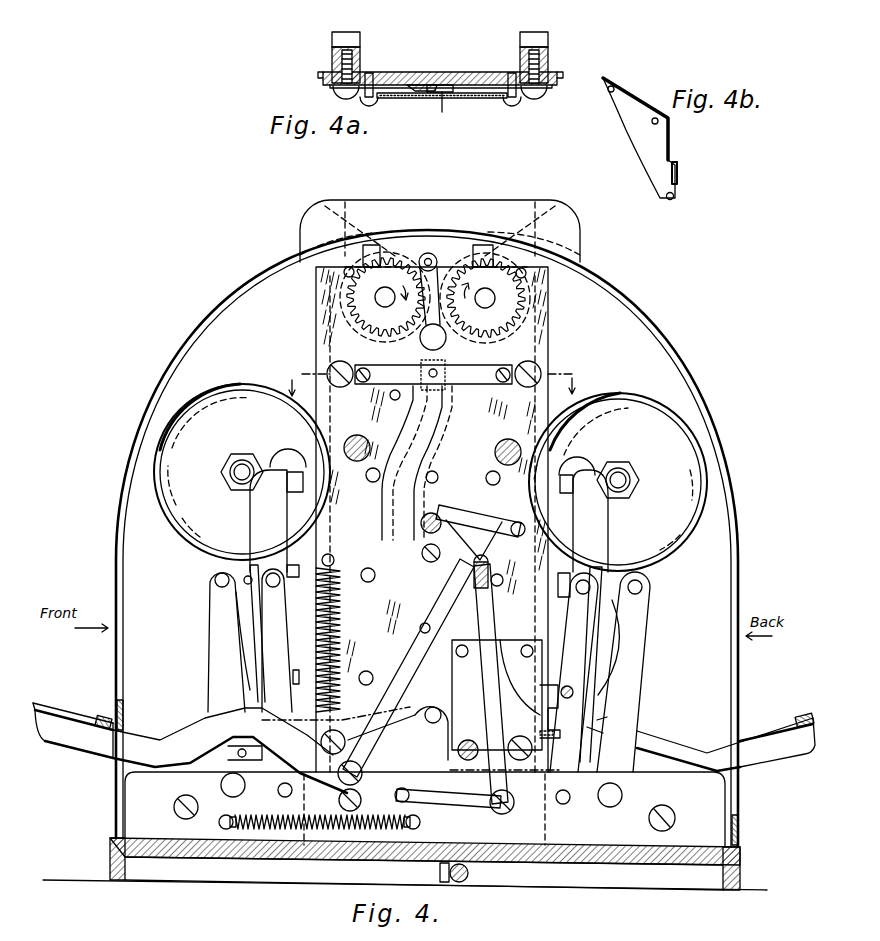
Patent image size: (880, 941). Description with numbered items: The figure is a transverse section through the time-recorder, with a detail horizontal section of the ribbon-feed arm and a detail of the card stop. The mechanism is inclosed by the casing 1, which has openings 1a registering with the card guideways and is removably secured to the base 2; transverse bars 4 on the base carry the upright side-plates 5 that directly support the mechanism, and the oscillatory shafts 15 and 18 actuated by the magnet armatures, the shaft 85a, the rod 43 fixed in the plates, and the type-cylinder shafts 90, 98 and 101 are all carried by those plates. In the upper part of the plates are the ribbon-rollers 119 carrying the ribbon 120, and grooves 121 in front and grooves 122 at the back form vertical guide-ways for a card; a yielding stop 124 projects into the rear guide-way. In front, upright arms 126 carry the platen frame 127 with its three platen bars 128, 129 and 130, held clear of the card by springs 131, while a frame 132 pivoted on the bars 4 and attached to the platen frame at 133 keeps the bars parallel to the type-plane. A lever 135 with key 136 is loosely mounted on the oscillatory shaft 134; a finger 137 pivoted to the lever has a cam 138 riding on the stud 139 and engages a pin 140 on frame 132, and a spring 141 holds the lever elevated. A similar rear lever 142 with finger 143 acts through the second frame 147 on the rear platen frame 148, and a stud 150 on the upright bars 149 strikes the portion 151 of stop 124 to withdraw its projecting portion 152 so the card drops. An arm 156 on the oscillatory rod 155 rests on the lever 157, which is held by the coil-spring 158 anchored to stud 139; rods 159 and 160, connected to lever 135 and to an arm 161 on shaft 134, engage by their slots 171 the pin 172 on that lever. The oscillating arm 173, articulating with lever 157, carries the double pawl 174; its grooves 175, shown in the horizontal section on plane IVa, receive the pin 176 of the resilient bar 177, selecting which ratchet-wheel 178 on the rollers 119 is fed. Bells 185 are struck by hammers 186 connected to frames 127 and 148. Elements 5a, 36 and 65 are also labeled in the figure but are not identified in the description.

In FIG. 4, the casing 1 is at (740, 554).
In FIG. 4, the openings 1a is at (312, 203).
In FIG. 4, the base 2 is at (742, 863).
In FIG. 4, the transverse bars 4 is at (425, 809).
In FIG. 4A, the side-plates 5 is at (458, 72).
In FIG. 4, the side-plates 5 is at (432, 508).
In FIG. 4, the frame top bar 5a is at (350, 262).
In FIG. 4, the oscillatory shaft 15 is at (437, 515).
In FIG. 4, the shaft 18 is at (468, 740).
In FIG. 4, the pin 36 is at (499, 484).
In FIG. 4, the rod 43 is at (437, 479).
In FIG. 4, the pin 65 is at (370, 481).
In FIG. 4, the shaft 85a is at (425, 623).
In FIG. 4, the shaft 90 is at (369, 583).
In FIG. 4, the shaft 98 is at (499, 584).
In FIG. 4, the shaft 101 is at (368, 671).
In FIG. 4, the ribbon-rollers 119 is at (435, 241).
In FIG. 4, the ribbon 120 is at (552, 345).
In FIG. 4A, the grooves 121 is at (322, 72).
In FIG. 4A, the grooves 122 is at (552, 72).
In FIG. 4B, the yielding stop 124 is at (632, 126).
In FIG. 4, the yielding stop 124 is at (505, 705).
In FIG. 4, the upright arms 126 is at (277, 640).
In FIG. 4, the platen frame 127 is at (268, 521).
In FIG. 4, the platen bar 128 is at (288, 485).
In FIG. 4, the platen bar 129 is at (290, 566).
In FIG. 4, the platen bar 130 is at (293, 680).
In FIG. 4, the springs 131 is at (268, 633).
In FIG. 4, the frame 132 is at (222, 783).
In FIG. 4, the pivot 133 is at (215, 580).
In FIG. 4, the oscillatory shaft 134 is at (432, 804).
In FIG. 4, the manually-operated lever 135 is at (192, 742).
In FIG. 4, the key 136 is at (62, 712).
In FIG. 4, the finger 137 is at (420, 712).
In FIG. 4, the cam 138 is at (342, 728).
In FIG. 4, the stud 139 is at (326, 754).
In FIG. 4, the pin 140 is at (232, 748).
In FIG. 4, the spring 141 is at (256, 824).
In FIG. 4, the second manually-operated lever 142 is at (726, 742).
In FIG. 4, the finger 143 is at (592, 746).
In FIG. 4, the second frame 147 is at (610, 810).
In FIG. 4, the platen frame 148 is at (584, 521).
In FIG. 4, the upright bars 149 is at (574, 672).
In FIG. 4, the stud 150 is at (566, 699).
In FIG. 4B, the portion of stop 151 is at (668, 174).
In FIG. 4, the portion of stop 151 is at (558, 692).
In FIG. 4B, the projecting portion 152 is at (675, 197).
In FIG. 4, the projecting portion 152 is at (549, 733).
In FIG. 4, the oscillatory rod 155 is at (520, 523).
In FIG. 4, the arm 156 is at (482, 521).
In FIG. 4, the lever 157 is at (446, 552).
In FIG. 4, the coil-spring 158 is at (341, 637).
In FIG. 4, the rod 159 is at (406, 672).
In FIG. 4, the rod 160 is at (494, 689).
In FIG. 4, the arm 161 is at (448, 797).
In FIG. 4, the slots 171 is at (472, 572).
In FIG. 4, the pin 172 is at (486, 559).
In FIG. 4A, the oscillating arm 173 is at (420, 85).
In FIG. 4, the oscillating arm 173 is at (401, 485).
In FIG. 4, the double pawl 174 is at (433, 257).
In FIG. 4A, the grooves 175 is at (437, 84).
In FIG. 4, the grooves 175 is at (432, 368).
In FIG. 4A, the pin 176 is at (442, 96).
In FIG. 4, the pin 176 is at (440, 374).
In FIG. 4A, the resilient bar 177 is at (480, 99).
In FIG. 4, the resilient bar 177 is at (419, 374).
In FIG. 4, the ratchet-wheels 178 is at (435, 297).
In FIG. 4, the bells 185 is at (430, 477).
In FIG. 4, the hammers 186 is at (286, 452).
In FIG. 4, the section line IVa is at (430, 381).